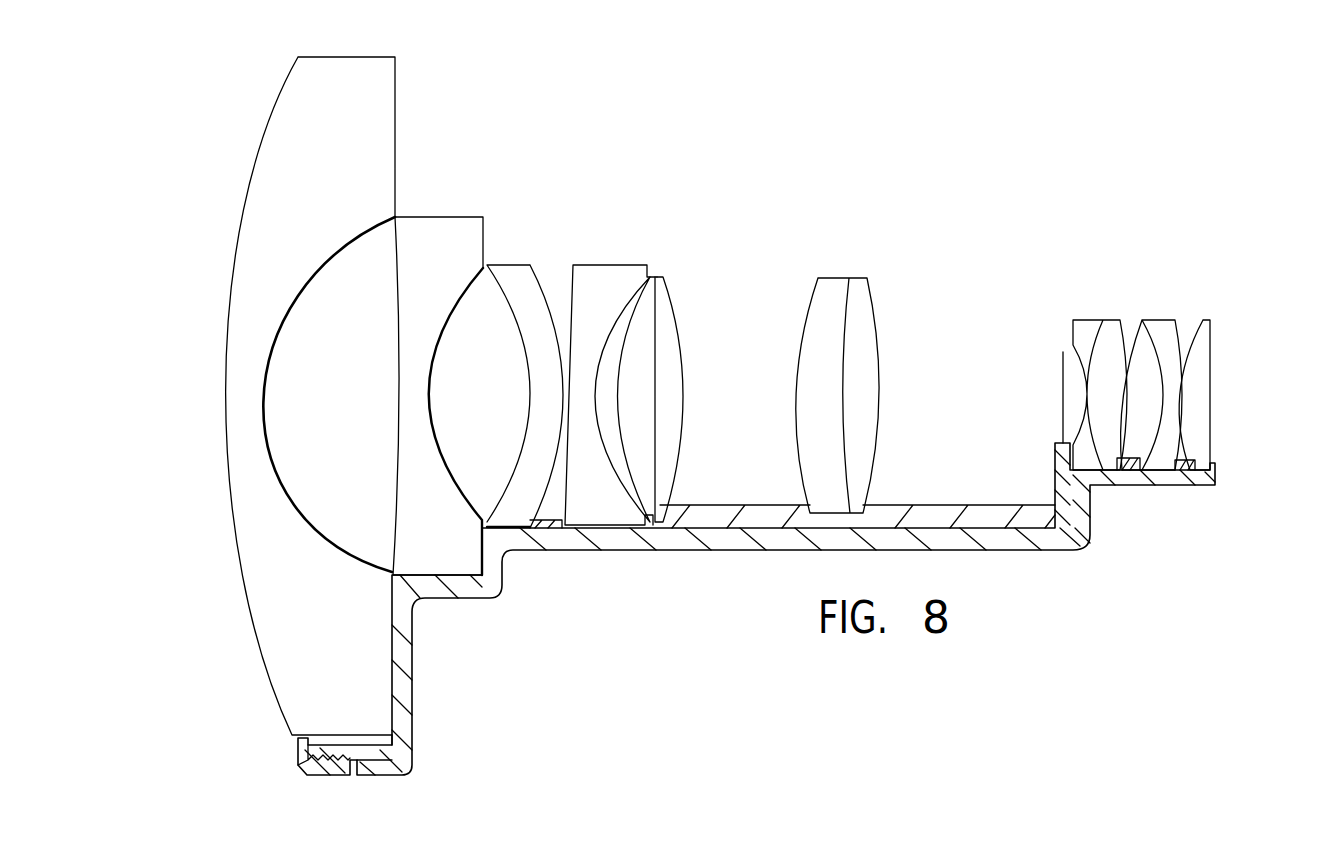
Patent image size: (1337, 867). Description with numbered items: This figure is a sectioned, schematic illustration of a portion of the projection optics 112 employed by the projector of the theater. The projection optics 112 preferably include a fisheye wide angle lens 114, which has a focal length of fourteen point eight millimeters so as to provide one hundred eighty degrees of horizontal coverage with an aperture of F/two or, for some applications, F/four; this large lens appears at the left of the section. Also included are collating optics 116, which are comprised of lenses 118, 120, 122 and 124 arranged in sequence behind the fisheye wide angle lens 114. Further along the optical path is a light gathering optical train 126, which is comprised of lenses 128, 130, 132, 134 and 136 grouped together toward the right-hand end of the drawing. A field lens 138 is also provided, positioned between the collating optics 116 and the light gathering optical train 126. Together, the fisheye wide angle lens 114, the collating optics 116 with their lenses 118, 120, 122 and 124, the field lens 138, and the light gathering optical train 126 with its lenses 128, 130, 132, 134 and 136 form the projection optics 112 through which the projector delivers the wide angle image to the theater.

The projection optics 112 is at (822, 150).
The fisheye wide angle lens 114 is at (373, 140).
The collating optics 116 is at (604, 573).
The lens 118 is at (460, 233).
The lens 120 is at (525, 288).
The lens 122 is at (617, 513).
The lens 124 is at (673, 305).
The light gathering optical train 126 is at (1144, 252).
The lens 128 is at (1085, 327).
The lens 130 is at (1108, 462).
The lens 132 is at (1138, 335).
The lens 134 is at (1162, 467).
The lens 136 is at (1203, 330).
The field lens 138 is at (843, 285).